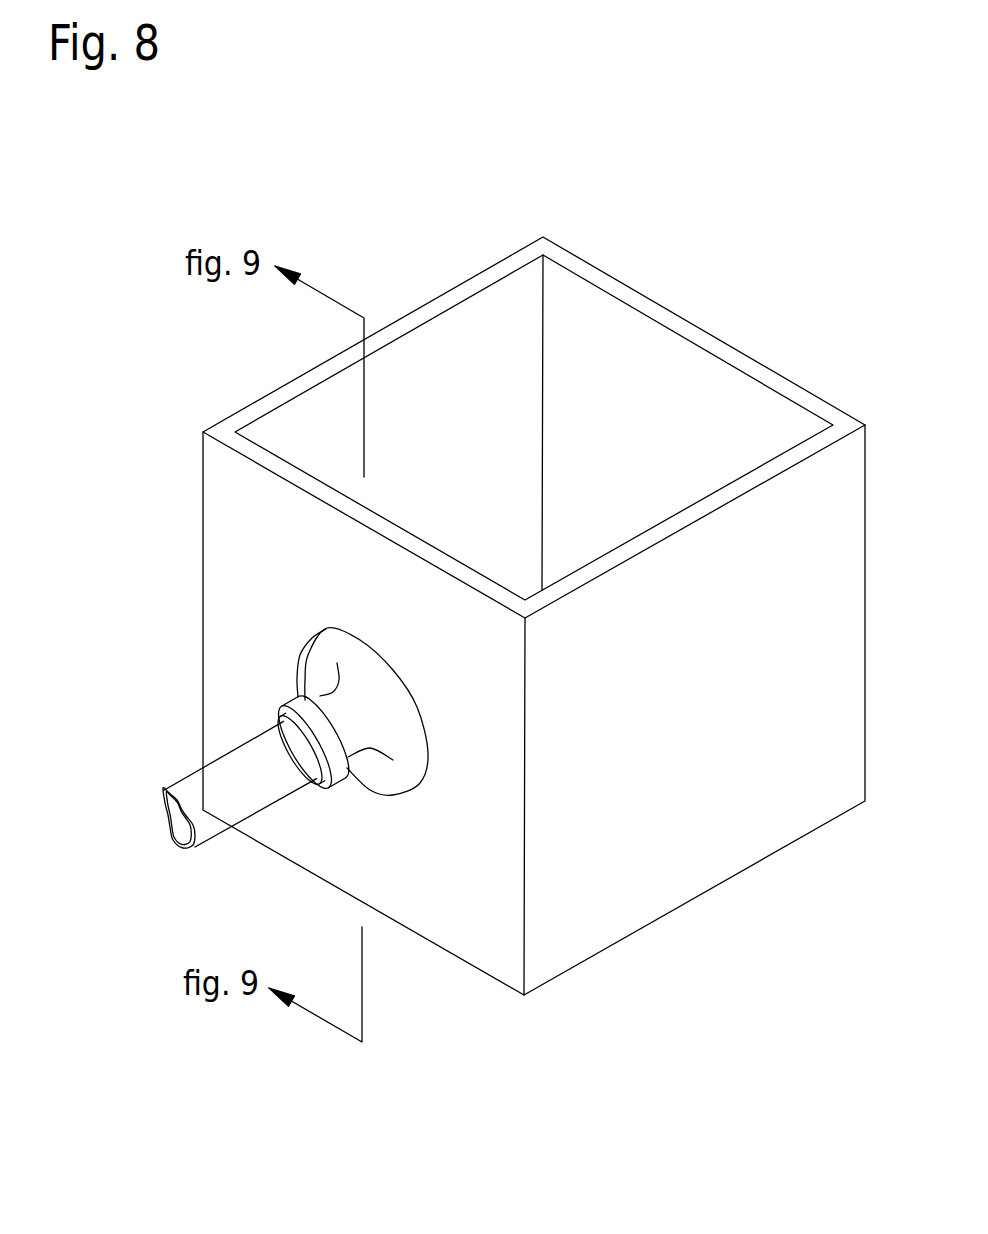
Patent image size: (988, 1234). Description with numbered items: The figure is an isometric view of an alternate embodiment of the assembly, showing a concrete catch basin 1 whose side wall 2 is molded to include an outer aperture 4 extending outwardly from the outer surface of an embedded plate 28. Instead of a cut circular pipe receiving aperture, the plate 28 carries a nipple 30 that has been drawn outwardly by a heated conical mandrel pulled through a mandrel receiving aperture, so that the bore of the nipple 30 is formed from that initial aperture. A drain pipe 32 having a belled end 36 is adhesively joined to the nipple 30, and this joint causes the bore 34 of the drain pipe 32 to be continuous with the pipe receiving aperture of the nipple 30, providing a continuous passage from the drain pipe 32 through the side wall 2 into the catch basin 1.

The concrete catch basin 1 is at (705, 308).
The side wall 2 is at (253, 532).
The outer aperture 4 is at (298, 675).
The plate 28 is at (343, 645).
The nipple 30 is at (362, 740).
The drain pipe 32 is at (223, 807).
The bore 34 is at (182, 830).
The belled end 36 is at (298, 710).